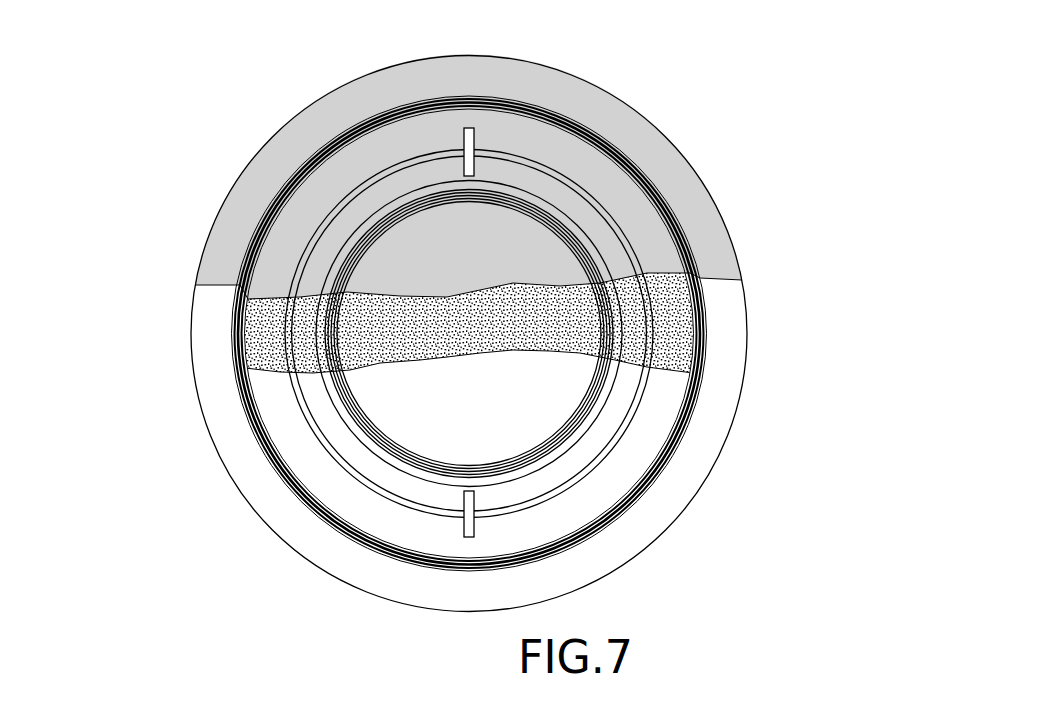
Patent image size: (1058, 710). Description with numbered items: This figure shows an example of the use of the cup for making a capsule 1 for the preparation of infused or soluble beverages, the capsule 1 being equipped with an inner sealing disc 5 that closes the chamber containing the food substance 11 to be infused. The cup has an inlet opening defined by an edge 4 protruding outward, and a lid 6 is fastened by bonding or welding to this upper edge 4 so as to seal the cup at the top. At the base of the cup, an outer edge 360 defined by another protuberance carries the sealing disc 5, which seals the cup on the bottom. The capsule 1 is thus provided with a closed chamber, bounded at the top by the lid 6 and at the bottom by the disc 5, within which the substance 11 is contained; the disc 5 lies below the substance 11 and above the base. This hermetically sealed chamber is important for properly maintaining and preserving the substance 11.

The capsule 1 is at (809, 133).
The edge 4 is at (688, 463).
The sealing disc 5 is at (410, 418).
The lid 6 is at (528, 268).
The substance 11 is at (705, 345).
The outer edge 360 is at (338, 403).